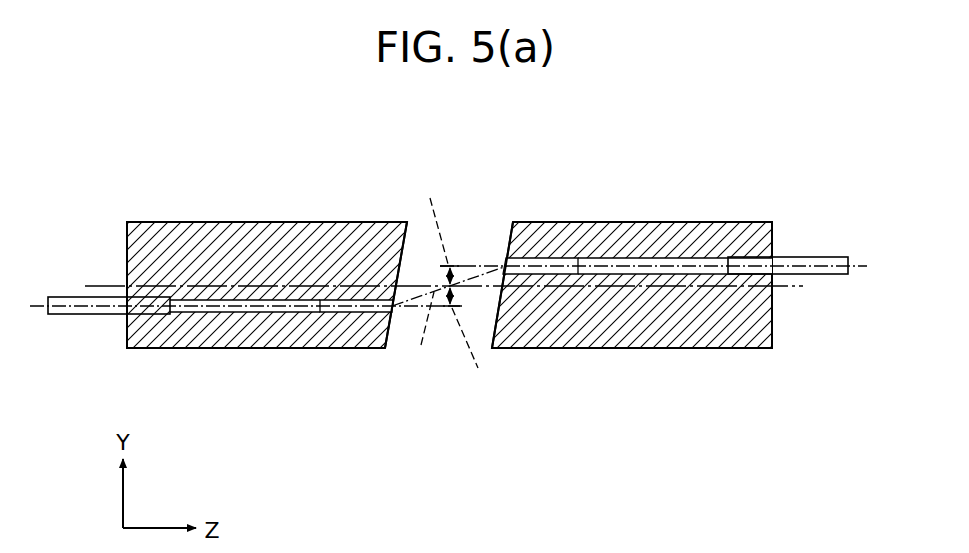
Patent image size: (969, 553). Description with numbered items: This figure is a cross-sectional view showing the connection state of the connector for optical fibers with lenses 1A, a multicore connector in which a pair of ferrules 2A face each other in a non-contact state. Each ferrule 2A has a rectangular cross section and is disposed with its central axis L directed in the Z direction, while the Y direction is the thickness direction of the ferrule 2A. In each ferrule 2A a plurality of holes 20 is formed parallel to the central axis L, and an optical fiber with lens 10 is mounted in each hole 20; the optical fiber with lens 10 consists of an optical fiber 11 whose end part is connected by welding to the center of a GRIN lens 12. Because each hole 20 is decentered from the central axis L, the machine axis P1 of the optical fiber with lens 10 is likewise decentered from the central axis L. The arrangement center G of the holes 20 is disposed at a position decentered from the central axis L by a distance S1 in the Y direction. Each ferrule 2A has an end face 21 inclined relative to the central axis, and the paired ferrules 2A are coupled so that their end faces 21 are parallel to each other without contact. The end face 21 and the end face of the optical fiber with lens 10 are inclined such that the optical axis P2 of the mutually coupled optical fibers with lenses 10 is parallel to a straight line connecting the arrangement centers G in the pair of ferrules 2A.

The connector for optical fibers with lenses 1A is at (549, 157).
The ferrule 2A is at (310, 223).
The optical fiber with lens 10 is at (471, 354).
The optical fiber 11 is at (270, 313).
The lens 12 is at (343, 313).
The hole 20 is at (220, 312).
The end face 21 is at (408, 222).
The central axis L is at (100, 286).
The arrangement center G is at (508, 262).
The machine axis P1 is at (455, 287).
The optical axis P2 is at (423, 332).
The distance S1 is at (451, 287).